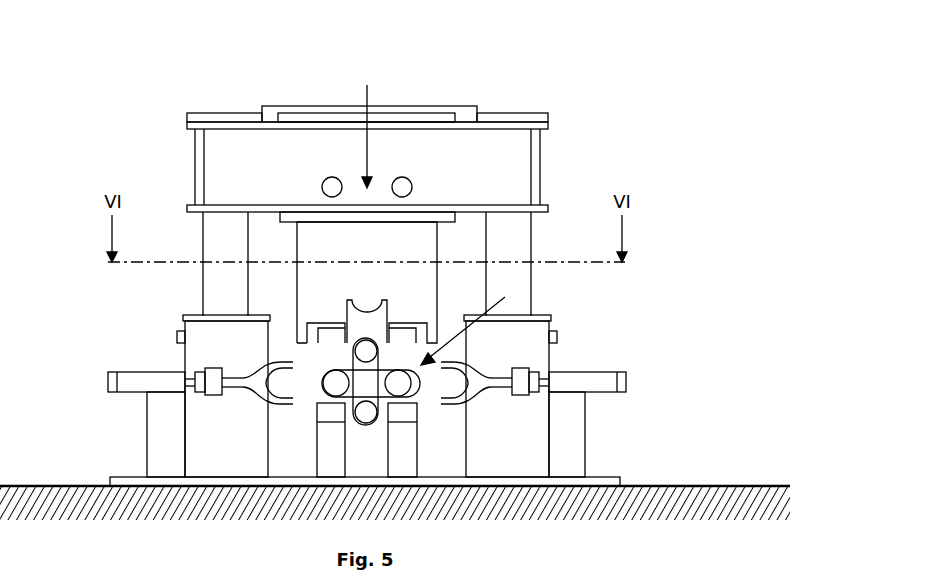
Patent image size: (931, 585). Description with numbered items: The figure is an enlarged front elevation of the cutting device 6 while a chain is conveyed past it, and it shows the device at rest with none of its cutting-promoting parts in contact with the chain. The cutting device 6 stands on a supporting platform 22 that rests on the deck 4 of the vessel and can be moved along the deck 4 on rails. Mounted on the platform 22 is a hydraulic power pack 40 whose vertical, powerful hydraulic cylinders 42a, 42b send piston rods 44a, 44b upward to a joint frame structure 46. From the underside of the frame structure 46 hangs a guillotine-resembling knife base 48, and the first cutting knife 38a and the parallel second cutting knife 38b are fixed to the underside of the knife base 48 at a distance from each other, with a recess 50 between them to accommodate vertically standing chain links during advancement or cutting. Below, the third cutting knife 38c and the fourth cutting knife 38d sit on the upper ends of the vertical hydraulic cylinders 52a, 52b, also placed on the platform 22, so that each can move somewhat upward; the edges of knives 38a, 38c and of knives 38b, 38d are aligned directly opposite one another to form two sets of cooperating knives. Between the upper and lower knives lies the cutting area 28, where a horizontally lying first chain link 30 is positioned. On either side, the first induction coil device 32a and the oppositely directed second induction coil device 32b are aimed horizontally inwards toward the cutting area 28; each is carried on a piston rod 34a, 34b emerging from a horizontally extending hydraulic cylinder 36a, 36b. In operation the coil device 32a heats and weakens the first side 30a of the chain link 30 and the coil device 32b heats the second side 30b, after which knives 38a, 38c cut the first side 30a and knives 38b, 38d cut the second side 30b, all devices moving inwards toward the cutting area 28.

The hydraulic power pack 40 is at (158, 124).
The cutting device 6 is at (366, 124).
The frame structure 46 is at (493, 152).
The knife base 48 is at (313, 242).
The piston rod 44a is at (222, 244).
The piston rod 44b is at (512, 244).
The recess 50 is at (368, 305).
The first cutting knife 38a is at (333, 336).
The second cutting knife 38b is at (397, 336).
The third cutting knife 38c is at (328, 408).
The fourth cutting knife 38d is at (406, 408).
The cutting area 28 is at (473, 320).
The first chain link 30 is at (346, 370).
The first side of the chain link 30a is at (336, 383).
The second side of the chain link 30b is at (398, 383).
The first induction coil device 32a is at (272, 362).
The second induction coil device 32b is at (462, 360).
The piston rod 34a is at (182, 372).
The piston rod 34b is at (548, 372).
The hydraulic cylinder 36a is at (112, 383).
The hydraulic cylinder 36b is at (615, 383).
The hydraulic cylinder 42a is at (200, 447).
The hydraulic cylinder 42b is at (560, 447).
The hydraulic cylinder 52a is at (322, 442).
The hydraulic cylinder 52b is at (400, 445).
The supporting platform 22 is at (603, 478).
The deck 4 is at (745, 487).